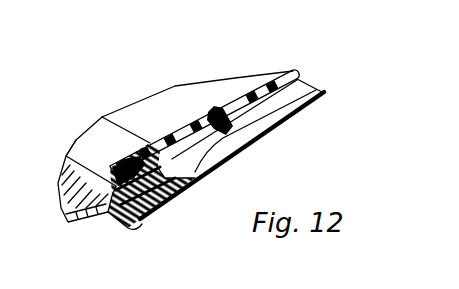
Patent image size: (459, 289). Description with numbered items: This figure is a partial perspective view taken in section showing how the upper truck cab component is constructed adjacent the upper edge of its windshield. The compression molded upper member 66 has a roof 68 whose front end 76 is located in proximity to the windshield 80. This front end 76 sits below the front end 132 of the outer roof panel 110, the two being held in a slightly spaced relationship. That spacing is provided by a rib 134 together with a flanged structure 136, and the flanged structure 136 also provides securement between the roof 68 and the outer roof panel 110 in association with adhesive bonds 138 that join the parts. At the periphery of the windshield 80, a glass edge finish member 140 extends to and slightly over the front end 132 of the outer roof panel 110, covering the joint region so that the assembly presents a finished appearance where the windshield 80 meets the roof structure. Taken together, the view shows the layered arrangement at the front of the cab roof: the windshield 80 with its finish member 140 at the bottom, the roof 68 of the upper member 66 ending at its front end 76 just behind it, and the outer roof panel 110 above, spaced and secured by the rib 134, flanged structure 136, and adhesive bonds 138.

The front end of the outer roof panel 132 is at (122, 122).
The glass edge finish member 140 is at (90, 150).
The adhesive bonds 138 is at (214, 120).
The outer roof panel 110 is at (270, 65).
The compression molded upper member 66 is at (338, 89).
The roof 68 is at (279, 132).
The rib 134 is at (232, 142).
The flanged structure 136 is at (178, 194).
The front end 76 is at (160, 210).
The windshield 80 is at (57, 226).